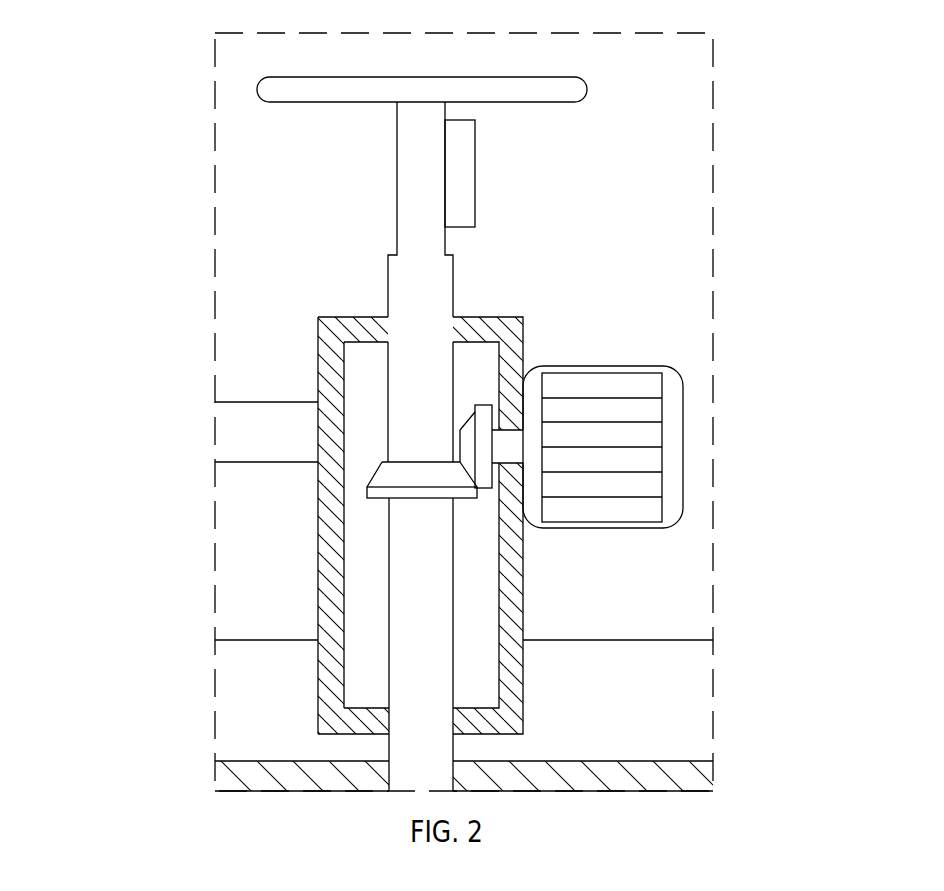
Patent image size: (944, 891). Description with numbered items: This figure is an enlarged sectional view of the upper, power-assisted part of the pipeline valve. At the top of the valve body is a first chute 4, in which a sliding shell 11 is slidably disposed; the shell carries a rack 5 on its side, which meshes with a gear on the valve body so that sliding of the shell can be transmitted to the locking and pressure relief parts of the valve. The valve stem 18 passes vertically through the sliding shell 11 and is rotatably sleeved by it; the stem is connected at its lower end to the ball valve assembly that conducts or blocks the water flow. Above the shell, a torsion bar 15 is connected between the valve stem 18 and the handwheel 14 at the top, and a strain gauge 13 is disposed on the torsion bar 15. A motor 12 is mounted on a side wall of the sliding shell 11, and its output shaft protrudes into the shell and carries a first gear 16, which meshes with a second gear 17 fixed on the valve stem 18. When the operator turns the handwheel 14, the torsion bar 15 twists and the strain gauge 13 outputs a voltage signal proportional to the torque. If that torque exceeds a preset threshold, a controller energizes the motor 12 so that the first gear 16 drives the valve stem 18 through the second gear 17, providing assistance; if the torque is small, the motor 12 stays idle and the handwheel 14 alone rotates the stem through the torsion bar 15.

The first chute 4 is at (577, 667).
The rack 5 is at (277, 445).
The sliding shell 11 is at (507, 548).
The motor 12 is at (603, 452).
The strain gauge 13 is at (458, 153).
The handwheel 14 is at (565, 90).
The torsion bar 15 is at (422, 179).
The first gear 16 is at (472, 448).
The second gear 17 is at (417, 483).
The valve stem 18 is at (427, 653).